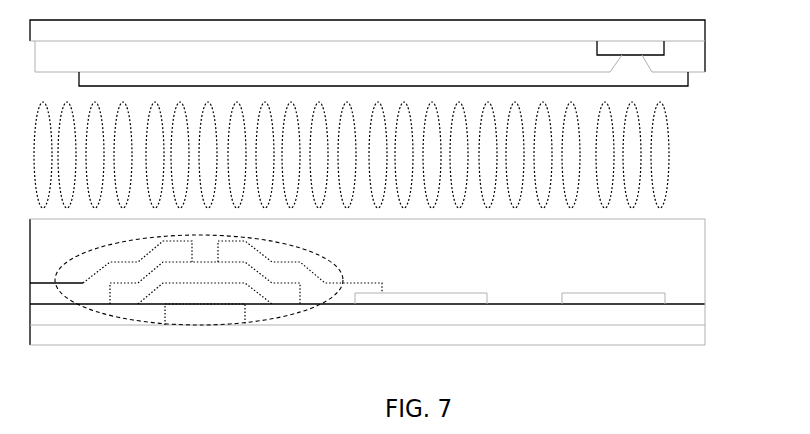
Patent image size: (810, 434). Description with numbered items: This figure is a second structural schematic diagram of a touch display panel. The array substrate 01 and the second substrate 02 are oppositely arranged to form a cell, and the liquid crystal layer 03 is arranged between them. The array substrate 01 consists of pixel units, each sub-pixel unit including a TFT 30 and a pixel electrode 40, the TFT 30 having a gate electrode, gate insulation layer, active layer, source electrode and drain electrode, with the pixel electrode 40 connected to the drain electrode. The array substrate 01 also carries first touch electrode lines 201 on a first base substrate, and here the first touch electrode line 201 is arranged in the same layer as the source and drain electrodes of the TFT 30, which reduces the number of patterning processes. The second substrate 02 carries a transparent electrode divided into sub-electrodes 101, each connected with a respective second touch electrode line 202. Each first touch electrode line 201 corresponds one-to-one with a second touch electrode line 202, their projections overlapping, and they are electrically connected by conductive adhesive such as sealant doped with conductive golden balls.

The second substrate 02 is at (416, 56).
The second touch electrode line 202 is at (648, 48).
The sub-electrode 101 is at (413, 81).
The liquid crystal layer 03 is at (680, 100).
The array substrate 01 is at (404, 301).
The TFT 30 is at (273, 318).
The pixel electrode 40 is at (402, 298).
The first touch electrode line 201 is at (628, 298).